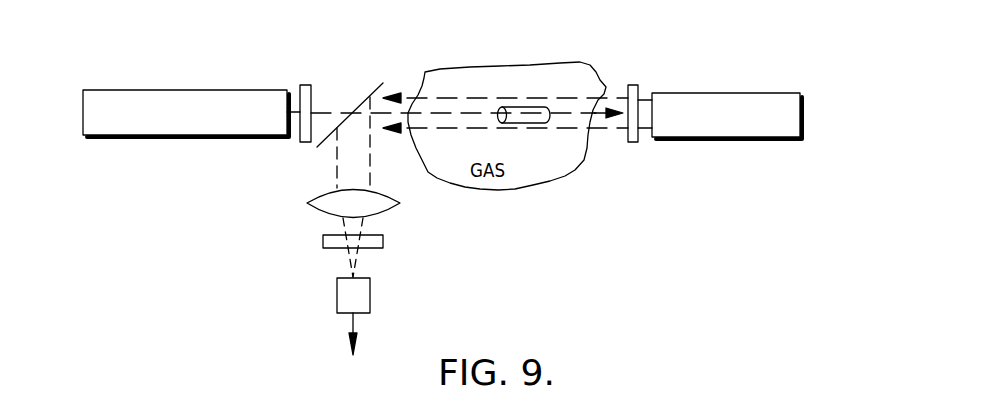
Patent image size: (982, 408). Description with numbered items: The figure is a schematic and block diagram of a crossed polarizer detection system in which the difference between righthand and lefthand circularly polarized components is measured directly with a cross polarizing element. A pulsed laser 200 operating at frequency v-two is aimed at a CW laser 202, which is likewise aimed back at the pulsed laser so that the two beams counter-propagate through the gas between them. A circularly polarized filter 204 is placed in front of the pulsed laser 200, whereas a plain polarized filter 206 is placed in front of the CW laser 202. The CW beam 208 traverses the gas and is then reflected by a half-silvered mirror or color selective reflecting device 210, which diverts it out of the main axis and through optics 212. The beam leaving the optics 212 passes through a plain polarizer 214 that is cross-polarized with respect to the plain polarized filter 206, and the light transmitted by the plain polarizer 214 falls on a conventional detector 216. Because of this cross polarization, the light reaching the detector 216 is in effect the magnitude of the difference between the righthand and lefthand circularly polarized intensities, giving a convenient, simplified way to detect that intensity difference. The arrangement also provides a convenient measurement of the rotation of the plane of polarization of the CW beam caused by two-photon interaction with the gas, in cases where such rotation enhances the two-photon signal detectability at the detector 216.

The pulsed laser 200 is at (214, 90).
The CW laser 202 is at (728, 93).
The circularly polarized filter 204 is at (306, 85).
The plain polarized filter 206 is at (633, 143).
The CW beam 208 is at (584, 97).
The half-silvered mirror or color selective reflecting device 210 is at (368, 97).
The optics 212 is at (312, 207).
The plain polarizer 214 is at (383, 241).
The detector 216 is at (371, 301).